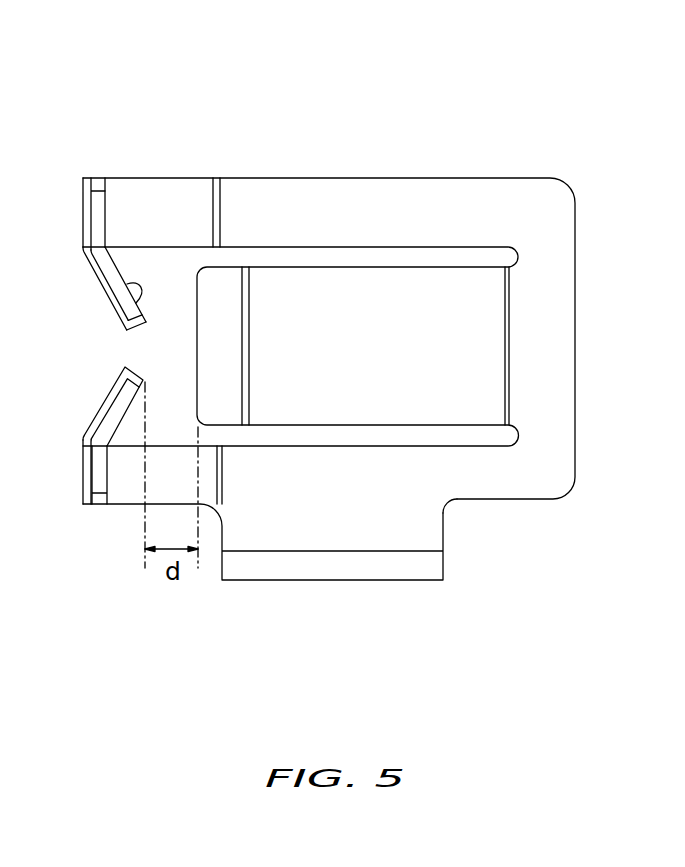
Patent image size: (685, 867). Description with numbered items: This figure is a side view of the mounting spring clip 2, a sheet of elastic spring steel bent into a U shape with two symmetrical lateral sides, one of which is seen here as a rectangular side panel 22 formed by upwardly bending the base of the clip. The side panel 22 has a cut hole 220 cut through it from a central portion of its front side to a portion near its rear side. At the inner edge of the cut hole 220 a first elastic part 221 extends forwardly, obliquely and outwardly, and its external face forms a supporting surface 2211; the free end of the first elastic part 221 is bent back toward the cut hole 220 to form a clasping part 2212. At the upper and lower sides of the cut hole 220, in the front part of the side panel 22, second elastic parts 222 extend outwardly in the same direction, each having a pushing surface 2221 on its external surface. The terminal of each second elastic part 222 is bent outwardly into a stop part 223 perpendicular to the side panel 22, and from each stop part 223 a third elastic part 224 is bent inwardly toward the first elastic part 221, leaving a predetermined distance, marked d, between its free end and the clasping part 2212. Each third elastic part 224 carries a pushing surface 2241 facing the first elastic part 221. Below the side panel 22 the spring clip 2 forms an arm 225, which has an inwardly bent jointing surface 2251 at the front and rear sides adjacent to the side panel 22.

The spring clip 2 is at (592, 371).
The side panel 22 is at (558, 320).
The cut hole 220 is at (488, 248).
The first elastic part 221 is at (396, 129).
The supporting surface 2211 is at (395, 280).
The clasping part 2212 is at (208, 277).
The second elastic part 222 is at (128, 108).
The pushing surface 2221 is at (138, 187).
The stop part 223 is at (97, 213).
The third elastic part 224 is at (108, 278).
The pushing surface 2241 is at (130, 307).
The arm 225 is at (430, 530).
The jointing surface 2251 is at (525, 502).